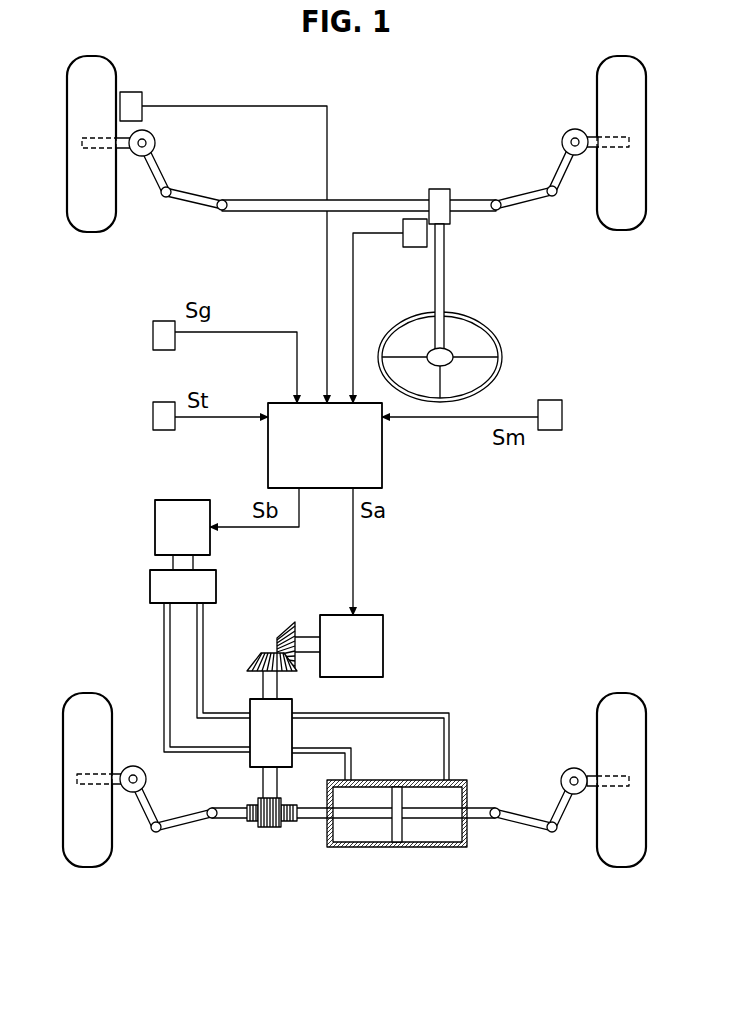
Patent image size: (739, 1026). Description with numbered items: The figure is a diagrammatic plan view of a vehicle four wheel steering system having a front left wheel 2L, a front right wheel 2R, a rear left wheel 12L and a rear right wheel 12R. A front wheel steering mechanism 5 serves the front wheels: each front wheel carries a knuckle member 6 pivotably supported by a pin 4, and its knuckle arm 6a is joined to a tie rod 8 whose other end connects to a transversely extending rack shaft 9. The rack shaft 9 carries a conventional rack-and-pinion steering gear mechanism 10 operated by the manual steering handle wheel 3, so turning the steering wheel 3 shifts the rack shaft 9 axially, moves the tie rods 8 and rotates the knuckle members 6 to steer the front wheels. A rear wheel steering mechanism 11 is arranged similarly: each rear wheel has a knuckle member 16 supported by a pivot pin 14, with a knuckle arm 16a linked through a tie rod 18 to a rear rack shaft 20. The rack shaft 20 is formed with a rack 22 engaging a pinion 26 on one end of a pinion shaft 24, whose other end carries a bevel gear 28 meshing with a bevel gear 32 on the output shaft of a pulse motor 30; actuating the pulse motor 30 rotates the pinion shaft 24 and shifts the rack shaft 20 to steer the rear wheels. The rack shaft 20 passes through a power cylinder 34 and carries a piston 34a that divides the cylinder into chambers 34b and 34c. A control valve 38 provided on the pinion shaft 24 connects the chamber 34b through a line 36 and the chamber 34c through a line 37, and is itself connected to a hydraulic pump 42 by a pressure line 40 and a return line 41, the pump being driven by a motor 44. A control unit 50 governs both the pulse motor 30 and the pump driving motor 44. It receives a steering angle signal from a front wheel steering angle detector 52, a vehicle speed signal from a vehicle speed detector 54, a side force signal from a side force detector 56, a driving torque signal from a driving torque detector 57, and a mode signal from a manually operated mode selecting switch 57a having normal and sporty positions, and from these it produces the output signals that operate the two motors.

The front left wheel 2L is at (86, 229).
The front right wheel 2R is at (625, 227).
The steering handle wheel 3 is at (500, 360).
The pin 4 is at (154, 139).
The front wheel steering mechanism 5 is at (366, 163).
The knuckle member 6 is at (138, 154).
The knuckle arm 6a is at (164, 177).
The tie rod 8 is at (192, 208).
The rack shaft 9 is at (296, 200).
The steering gear mechanism 10 is at (455, 176).
The rear wheel steering mechanism 11 is at (478, 763).
The rear left wheel 12L is at (86, 868).
The rear right wheel 12R is at (622, 868).
The pivot pin 14 is at (133, 766).
The knuckle member 16 is at (133, 793).
The knuckle arm 16a is at (153, 811).
The tie rod 18 is at (182, 824).
The rack shaft 20 is at (230, 819).
The rack 22 is at (288, 805).
The pinion shaft 24 is at (262, 783).
The pinion 26 is at (270, 828).
The bevel gear 28 is at (248, 667).
The pulse motor 30 is at (383, 637).
The bevel gear 32 is at (293, 622).
The power cylinder 34 is at (368, 851).
The piston 34a is at (397, 830).
The chamber 34b is at (440, 822).
The chamber 34c is at (347, 822).
The line 36 is at (444, 763).
The line 37 is at (351, 766).
The control valve 38 is at (294, 709).
The pressure line 40 is at (162, 641).
The return line 41 is at (205, 641).
The hydraulic pump 42 is at (155, 587).
The motor 44 is at (160, 525).
The control unit 50 is at (382, 462).
The front wheel steering angle detector 52 is at (414, 219).
The vehicle speed detector 54 is at (140, 93).
The side force detector 56 is at (153, 340).
The driving torque detector 57 is at (153, 418).
The mode selecting switch 57a is at (558, 402).